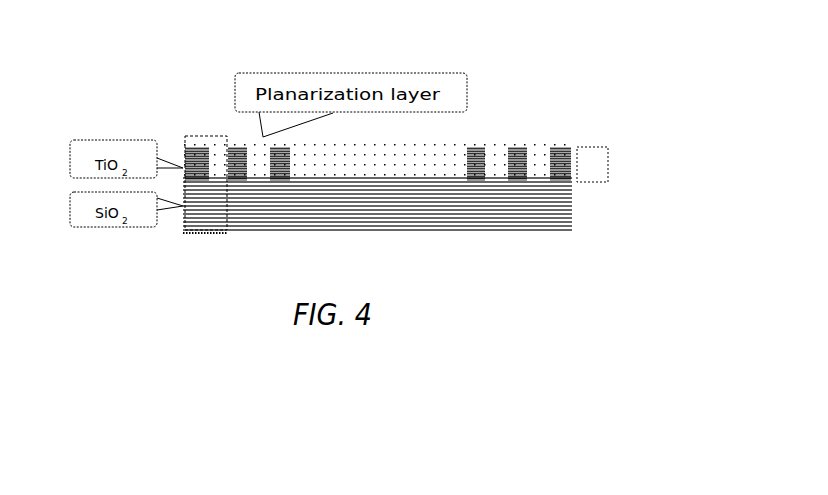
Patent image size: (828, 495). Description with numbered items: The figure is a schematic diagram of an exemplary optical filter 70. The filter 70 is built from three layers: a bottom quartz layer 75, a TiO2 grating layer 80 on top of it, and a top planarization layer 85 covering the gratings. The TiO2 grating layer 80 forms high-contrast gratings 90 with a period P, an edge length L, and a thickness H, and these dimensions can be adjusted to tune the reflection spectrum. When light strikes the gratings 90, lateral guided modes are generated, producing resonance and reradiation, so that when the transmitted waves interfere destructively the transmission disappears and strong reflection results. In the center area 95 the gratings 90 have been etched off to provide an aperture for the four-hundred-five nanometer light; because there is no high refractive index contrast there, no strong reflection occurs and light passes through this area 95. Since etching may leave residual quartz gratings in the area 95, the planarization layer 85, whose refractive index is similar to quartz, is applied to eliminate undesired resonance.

The optical filter 70 is at (429, 213).
The bottom quartz layer 75 is at (572, 208).
The TiO2 grating layer 80 is at (477, 158).
The top planarization layer 85 is at (438, 145).
The gratings 90 is at (245, 187).
The center area 95 is at (422, 182).